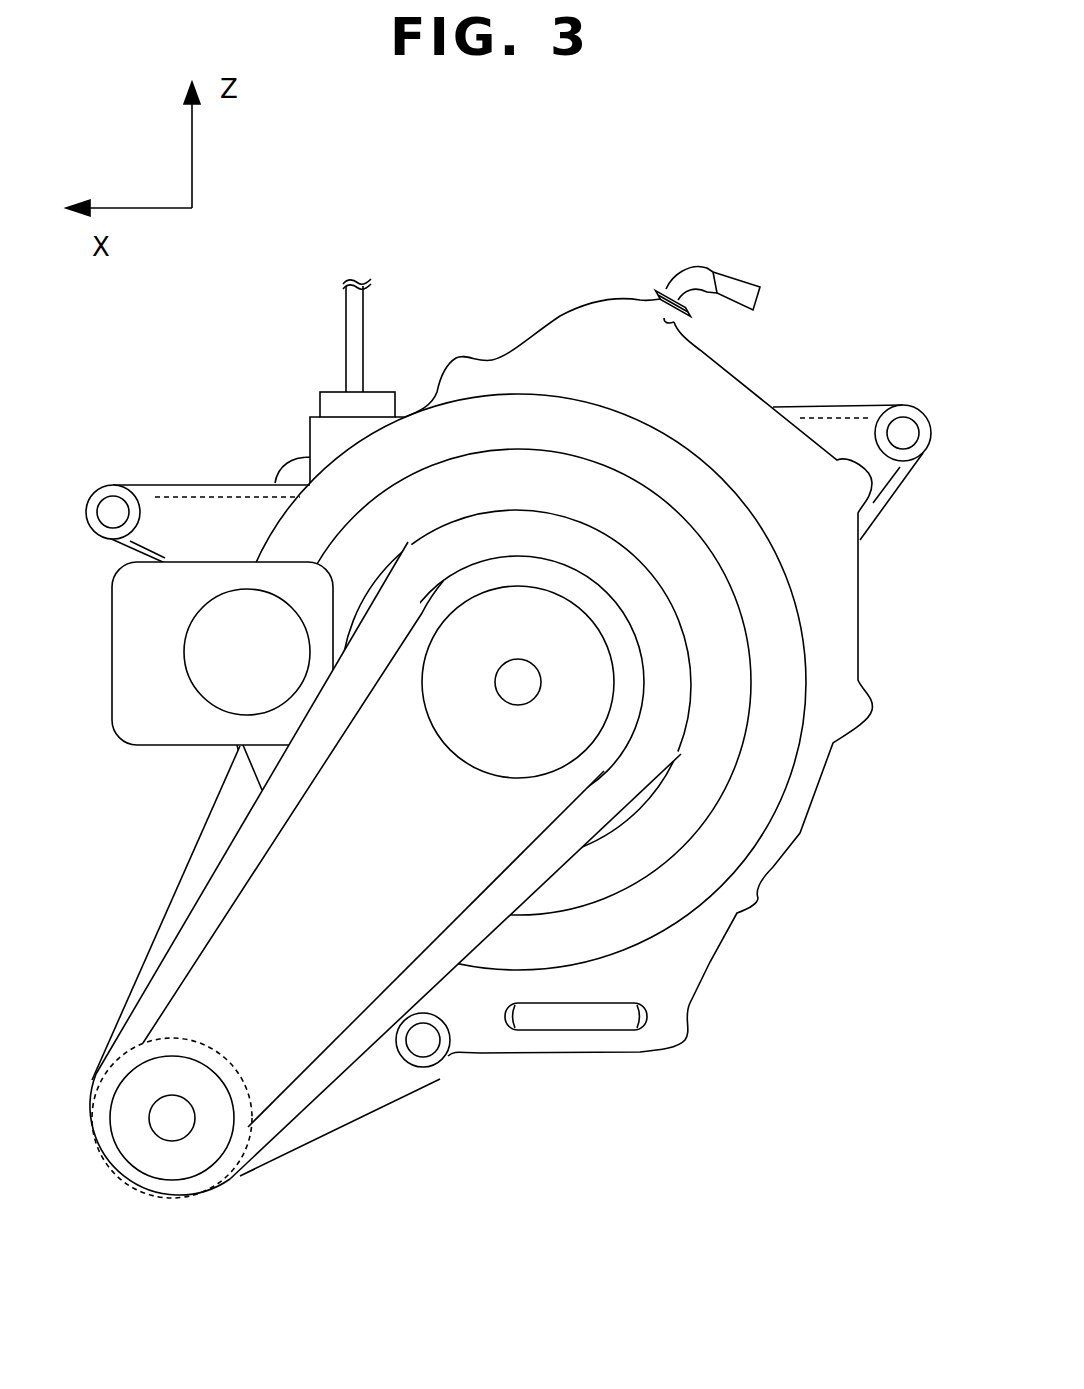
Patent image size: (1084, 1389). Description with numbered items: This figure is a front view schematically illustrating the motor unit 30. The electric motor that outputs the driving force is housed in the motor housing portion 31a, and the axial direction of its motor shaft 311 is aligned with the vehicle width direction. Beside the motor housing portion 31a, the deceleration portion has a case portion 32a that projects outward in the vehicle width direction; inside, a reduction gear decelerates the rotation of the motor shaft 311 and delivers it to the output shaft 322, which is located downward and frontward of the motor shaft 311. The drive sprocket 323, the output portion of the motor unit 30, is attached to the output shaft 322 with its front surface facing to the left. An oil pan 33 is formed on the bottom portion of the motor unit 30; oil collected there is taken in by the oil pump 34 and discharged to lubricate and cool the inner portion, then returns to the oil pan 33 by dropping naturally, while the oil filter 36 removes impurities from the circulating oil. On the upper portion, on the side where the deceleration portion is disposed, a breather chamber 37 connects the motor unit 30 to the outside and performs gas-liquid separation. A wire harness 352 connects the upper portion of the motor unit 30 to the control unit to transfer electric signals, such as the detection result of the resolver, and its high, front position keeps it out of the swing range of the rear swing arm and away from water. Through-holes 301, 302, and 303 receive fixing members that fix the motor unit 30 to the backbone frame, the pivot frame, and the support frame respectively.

The motor unit 30 is at (500, 712).
The motor housing portion 31a is at (785, 698).
The motor shaft 311 is at (536, 700).
The case portion 32a is at (328, 1008).
The oil pan 33 is at (710, 962).
The oil pump 34 is at (150, 745).
The oil filter 36 is at (647, 1013).
The breather chamber 37 is at (623, 298).
The through-hole 301 is at (113, 485).
The through-hole 302 is at (438, 1054).
The through-hole 303 is at (902, 406).
The output shaft 322 is at (174, 1142).
The drive sprocket 323 is at (228, 1168).
The wire harness 352 is at (343, 363).